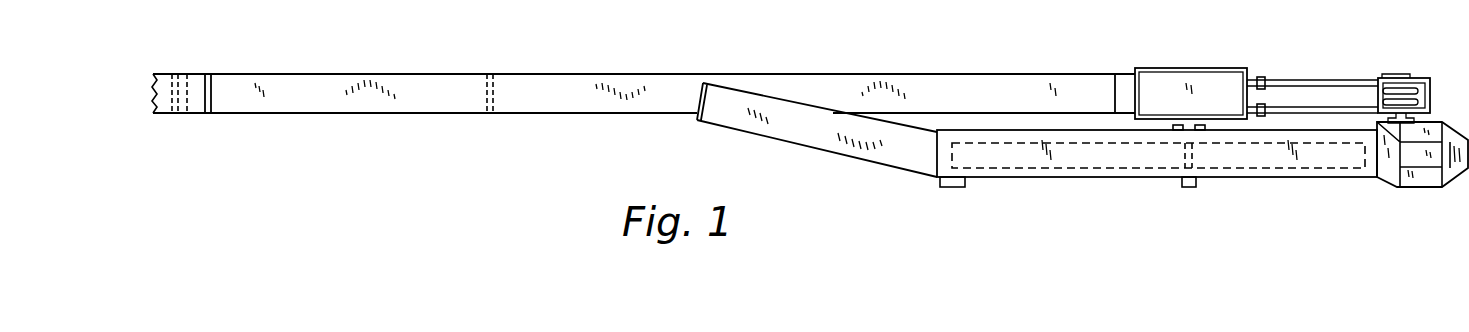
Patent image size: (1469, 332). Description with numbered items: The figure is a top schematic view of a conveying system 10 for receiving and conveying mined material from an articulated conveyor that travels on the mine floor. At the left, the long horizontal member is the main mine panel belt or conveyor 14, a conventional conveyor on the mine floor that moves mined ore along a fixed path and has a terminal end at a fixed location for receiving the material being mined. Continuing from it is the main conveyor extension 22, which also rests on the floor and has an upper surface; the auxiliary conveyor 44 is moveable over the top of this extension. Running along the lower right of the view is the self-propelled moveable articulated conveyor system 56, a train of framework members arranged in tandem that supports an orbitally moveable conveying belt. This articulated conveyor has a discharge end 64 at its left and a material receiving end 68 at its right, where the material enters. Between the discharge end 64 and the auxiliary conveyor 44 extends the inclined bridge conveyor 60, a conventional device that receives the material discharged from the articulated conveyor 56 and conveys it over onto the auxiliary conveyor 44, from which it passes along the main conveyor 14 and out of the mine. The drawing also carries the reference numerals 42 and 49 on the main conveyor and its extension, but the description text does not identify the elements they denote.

The conveying system 10 is at (622, 40).
The main mine panel belt or conveyor 14 is at (163, 117).
The main conveyor extension 22 is at (207, 81).
The dashed fastener openings 42 is at (182, 75).
The auxiliary conveyor 44 is at (368, 115).
The block with rods 49 is at (1123, 80).
The moveable articulated conveyor system 56 is at (1051, 178).
The bridge conveyor 60 is at (853, 156).
The discharge end 64 is at (945, 168).
The material receiving end 68 is at (1433, 175).